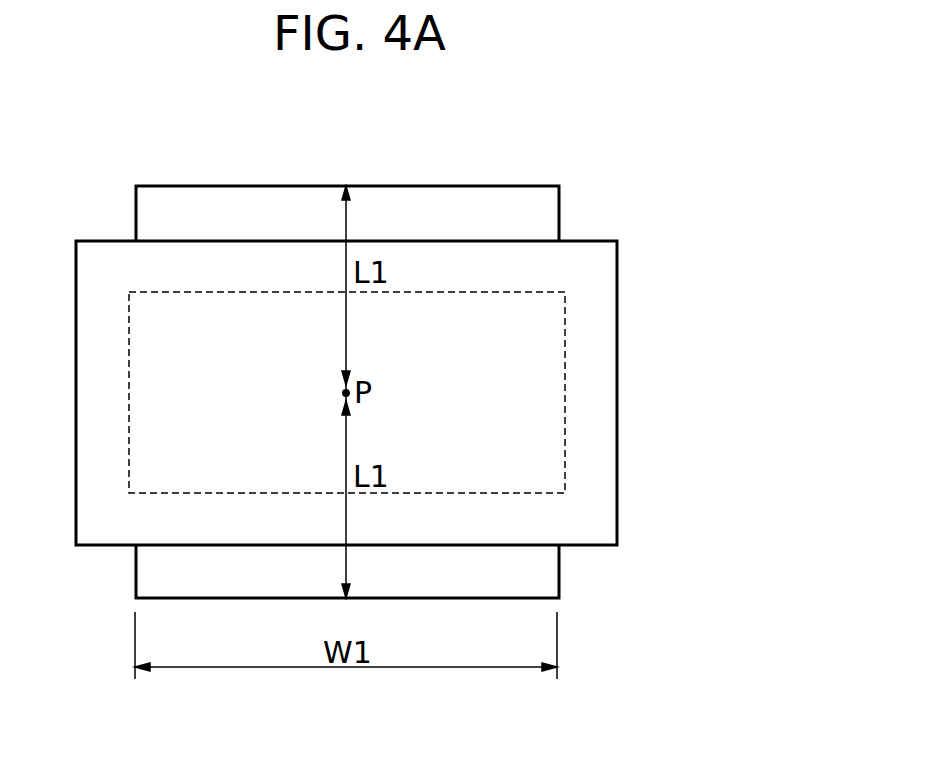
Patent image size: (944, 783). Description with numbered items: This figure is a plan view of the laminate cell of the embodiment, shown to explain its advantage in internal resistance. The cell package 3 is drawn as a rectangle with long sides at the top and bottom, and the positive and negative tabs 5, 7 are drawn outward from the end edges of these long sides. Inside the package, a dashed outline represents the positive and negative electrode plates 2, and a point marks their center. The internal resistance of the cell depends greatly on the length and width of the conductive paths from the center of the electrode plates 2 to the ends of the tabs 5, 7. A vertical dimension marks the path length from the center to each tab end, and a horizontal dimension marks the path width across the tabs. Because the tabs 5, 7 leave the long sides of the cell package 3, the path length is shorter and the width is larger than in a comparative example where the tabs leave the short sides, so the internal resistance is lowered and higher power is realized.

The positive and negative electrode plates 2 is at (546, 321).
The cell package 3 is at (603, 462).
The positive tab 5 is at (503, 200).
The negative tab 7 is at (545, 575).